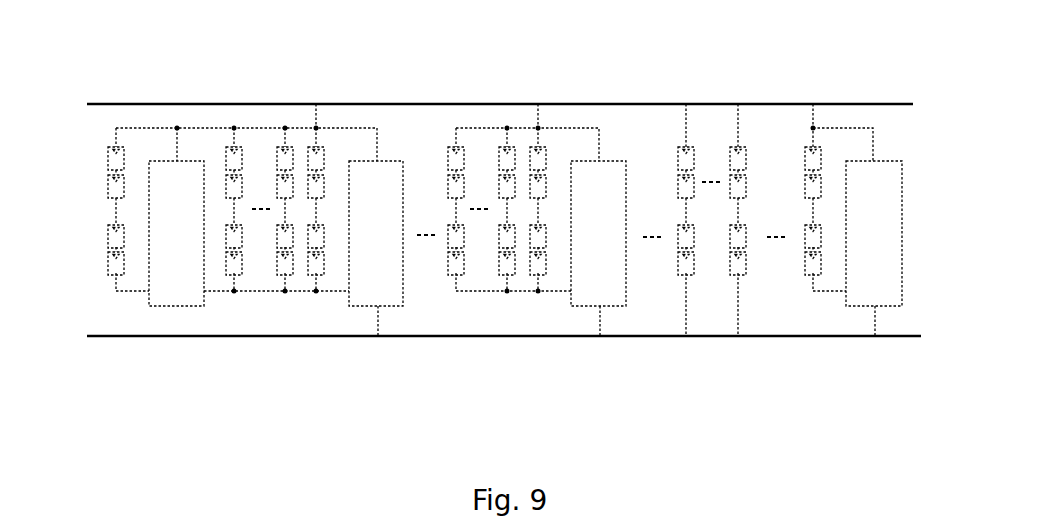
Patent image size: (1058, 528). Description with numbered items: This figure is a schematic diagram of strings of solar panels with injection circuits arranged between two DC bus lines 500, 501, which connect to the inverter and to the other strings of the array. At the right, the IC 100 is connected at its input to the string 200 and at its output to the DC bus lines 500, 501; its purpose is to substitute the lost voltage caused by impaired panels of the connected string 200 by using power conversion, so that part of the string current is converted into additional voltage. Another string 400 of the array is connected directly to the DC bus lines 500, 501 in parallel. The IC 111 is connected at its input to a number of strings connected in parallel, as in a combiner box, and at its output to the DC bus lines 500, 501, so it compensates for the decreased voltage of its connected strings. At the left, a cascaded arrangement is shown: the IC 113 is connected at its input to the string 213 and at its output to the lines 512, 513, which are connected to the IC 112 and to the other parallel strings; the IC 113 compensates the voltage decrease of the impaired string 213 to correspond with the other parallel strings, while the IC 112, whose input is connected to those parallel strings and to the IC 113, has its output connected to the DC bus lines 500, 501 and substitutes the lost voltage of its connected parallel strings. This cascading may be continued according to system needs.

The IC 100 is at (892, 246).
The IC 111 is at (589, 277).
The IC 112 is at (368, 293).
The IC 113 is at (168, 283).
The string 200 is at (805, 137).
The string 213 is at (112, 139).
The string 400 is at (656, 209).
The DC bus line 500 is at (864, 98).
The DC bus line 501 is at (868, 338).
The line 512 is at (260, 292).
The line 513 is at (259, 127).